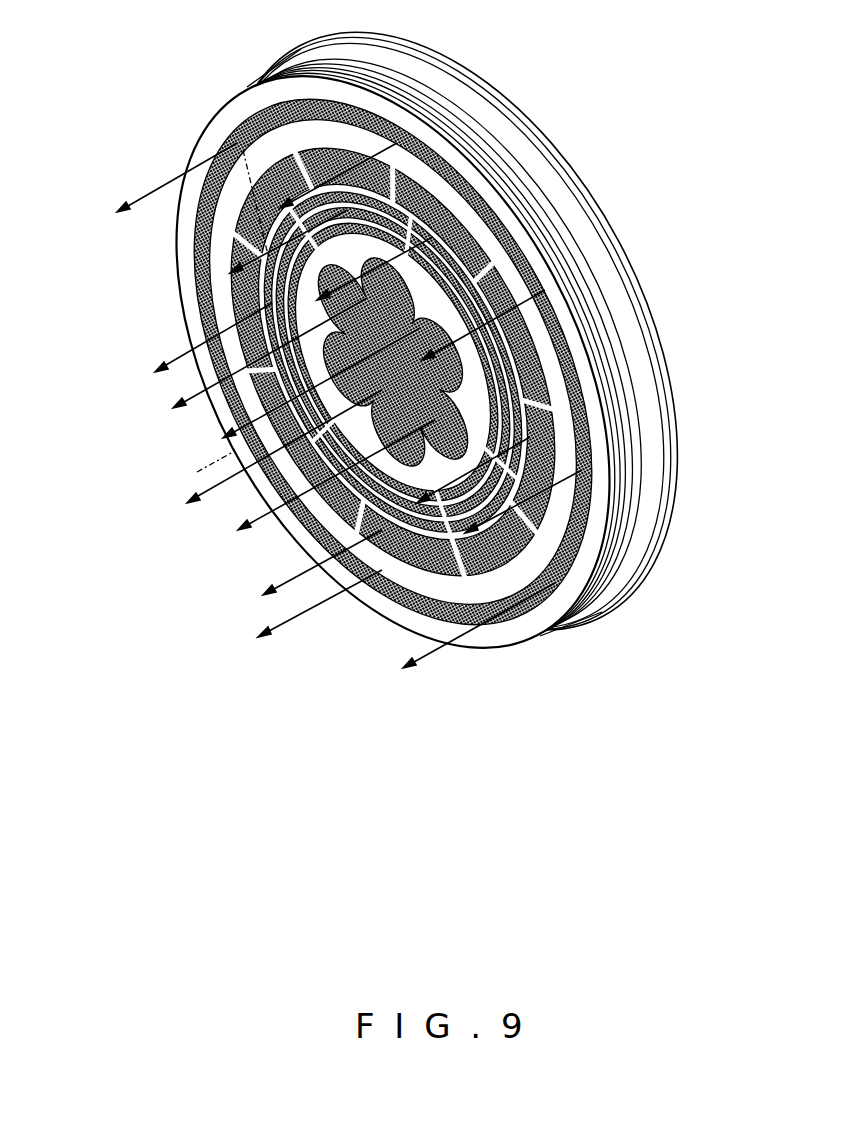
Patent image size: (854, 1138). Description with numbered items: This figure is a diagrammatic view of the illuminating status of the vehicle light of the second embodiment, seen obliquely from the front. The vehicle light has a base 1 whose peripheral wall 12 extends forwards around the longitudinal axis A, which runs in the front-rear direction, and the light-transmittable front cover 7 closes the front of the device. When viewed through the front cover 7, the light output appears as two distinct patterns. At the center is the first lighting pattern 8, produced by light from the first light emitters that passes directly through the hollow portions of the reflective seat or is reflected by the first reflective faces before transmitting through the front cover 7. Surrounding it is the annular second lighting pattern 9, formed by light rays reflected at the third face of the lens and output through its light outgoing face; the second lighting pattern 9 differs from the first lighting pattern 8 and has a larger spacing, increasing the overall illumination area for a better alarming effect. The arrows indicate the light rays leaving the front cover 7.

The base 1 is at (660, 270).
The front cover 7 is at (390, 593).
The first lighting pattern 8 is at (337, 350).
The second lighting pattern 9 is at (238, 258).
The peripheral wall 12 is at (637, 357).
The longitudinal axis A is at (537, 277).